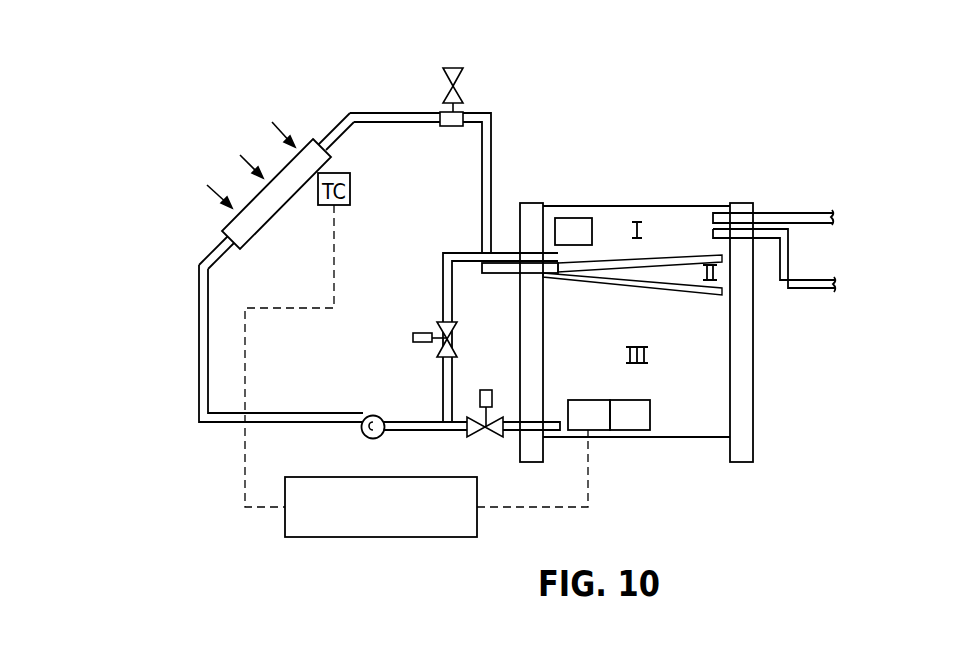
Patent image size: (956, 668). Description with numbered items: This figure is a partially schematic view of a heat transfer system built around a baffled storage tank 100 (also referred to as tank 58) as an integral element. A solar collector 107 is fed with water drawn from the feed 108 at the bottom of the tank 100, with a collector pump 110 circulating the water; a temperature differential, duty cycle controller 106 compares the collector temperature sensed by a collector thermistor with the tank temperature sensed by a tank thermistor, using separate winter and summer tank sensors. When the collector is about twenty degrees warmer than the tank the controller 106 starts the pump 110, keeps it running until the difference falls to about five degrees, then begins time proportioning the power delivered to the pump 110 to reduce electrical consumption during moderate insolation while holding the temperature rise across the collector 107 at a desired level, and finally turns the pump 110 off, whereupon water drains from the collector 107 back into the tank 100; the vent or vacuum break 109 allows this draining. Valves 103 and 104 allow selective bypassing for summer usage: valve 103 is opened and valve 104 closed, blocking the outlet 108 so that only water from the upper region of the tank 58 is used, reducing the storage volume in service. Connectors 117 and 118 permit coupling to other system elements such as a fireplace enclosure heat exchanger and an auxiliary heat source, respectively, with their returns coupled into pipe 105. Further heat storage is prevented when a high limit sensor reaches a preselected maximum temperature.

The tank 58 is at (665, 295).
The tank 100 is at (753, 420).
The valve 103 is at (430, 326).
The valve 104 is at (498, 385).
The pipe 105 is at (506, 270).
The temperature differential controller 106 is at (405, 537).
The collector 107 is at (255, 218).
The feed 108 is at (512, 430).
The vent or vacuum break 109 is at (461, 73).
The collector pump 110 is at (375, 416).
The connector 117 is at (812, 215).
The connector 118 is at (812, 288).